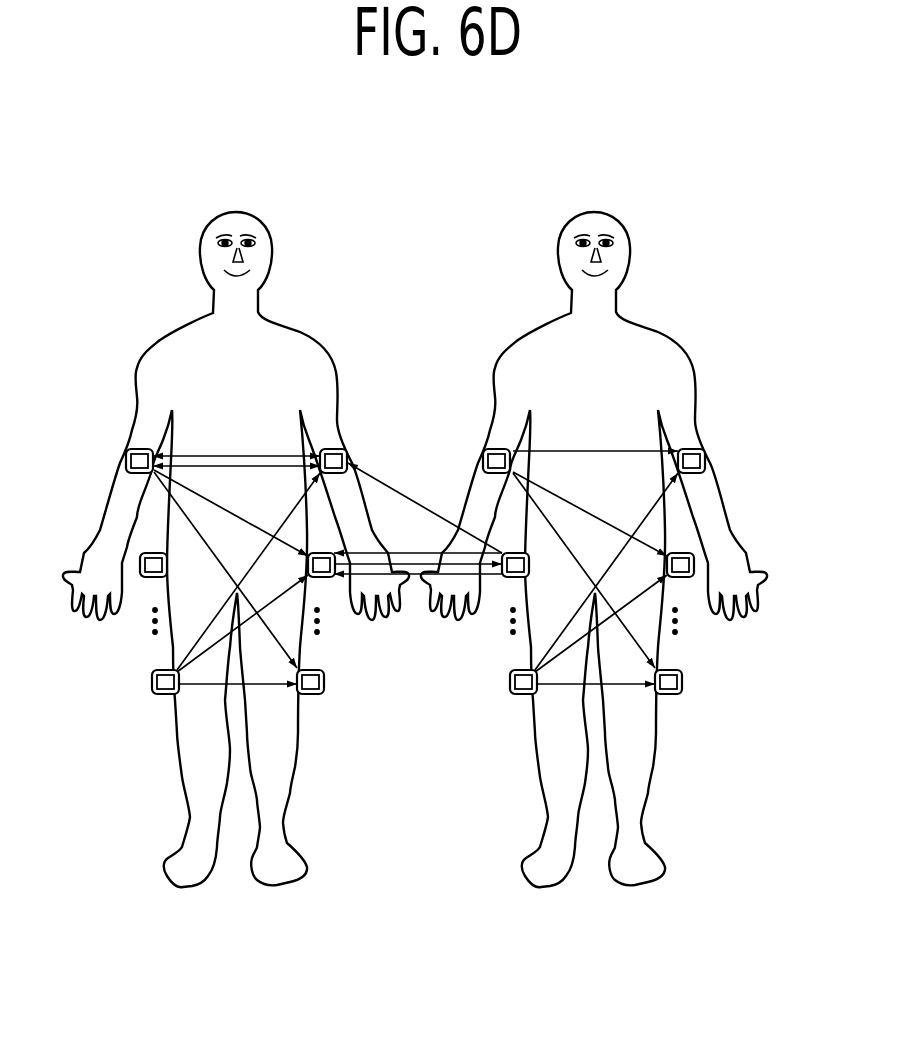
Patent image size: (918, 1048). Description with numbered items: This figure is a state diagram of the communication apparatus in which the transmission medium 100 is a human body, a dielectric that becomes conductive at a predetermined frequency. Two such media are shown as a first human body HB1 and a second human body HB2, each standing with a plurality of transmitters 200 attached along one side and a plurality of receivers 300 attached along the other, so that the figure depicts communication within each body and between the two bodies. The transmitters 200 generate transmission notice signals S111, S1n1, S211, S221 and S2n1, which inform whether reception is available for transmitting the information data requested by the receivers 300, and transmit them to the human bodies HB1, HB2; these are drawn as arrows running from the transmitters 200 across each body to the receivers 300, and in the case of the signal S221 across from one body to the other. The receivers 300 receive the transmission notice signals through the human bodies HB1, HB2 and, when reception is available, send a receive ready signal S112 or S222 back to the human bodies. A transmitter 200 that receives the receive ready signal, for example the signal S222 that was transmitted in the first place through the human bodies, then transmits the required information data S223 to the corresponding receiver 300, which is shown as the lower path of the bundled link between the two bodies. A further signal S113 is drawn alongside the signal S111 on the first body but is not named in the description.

The transmission medium 100 is at (296, 331).
The transmitter 200 is at (126, 459).
The receiver 300 is at (345, 450).
The human body HB1 is at (238, 374).
The human body HB2 is at (596, 374).
The transmission notice signal S111 is at (236, 543).
The receive ready signal S112 is at (156, 450).
The intra-body signal S113 is at (236, 484).
The transmission notice signal S1n1 is at (231, 597).
The transmission notice signal S211 is at (595, 559).
The transmission notice signal S2n1 is at (590, 598).
The transmission notice signal S221 is at (418, 509).
The receive ready signal S222 is at (362, 553).
The information data S223 is at (418, 605).